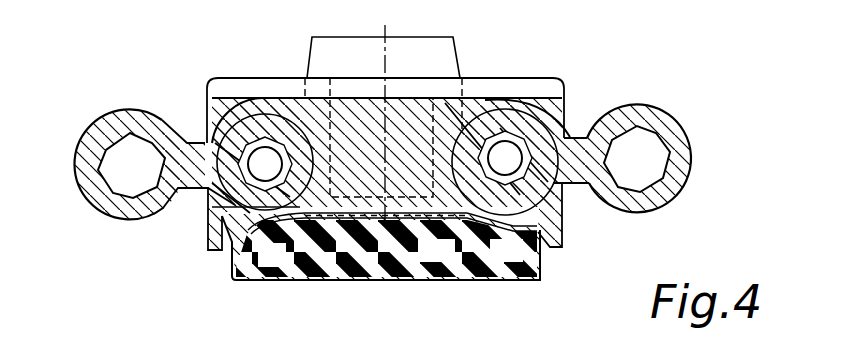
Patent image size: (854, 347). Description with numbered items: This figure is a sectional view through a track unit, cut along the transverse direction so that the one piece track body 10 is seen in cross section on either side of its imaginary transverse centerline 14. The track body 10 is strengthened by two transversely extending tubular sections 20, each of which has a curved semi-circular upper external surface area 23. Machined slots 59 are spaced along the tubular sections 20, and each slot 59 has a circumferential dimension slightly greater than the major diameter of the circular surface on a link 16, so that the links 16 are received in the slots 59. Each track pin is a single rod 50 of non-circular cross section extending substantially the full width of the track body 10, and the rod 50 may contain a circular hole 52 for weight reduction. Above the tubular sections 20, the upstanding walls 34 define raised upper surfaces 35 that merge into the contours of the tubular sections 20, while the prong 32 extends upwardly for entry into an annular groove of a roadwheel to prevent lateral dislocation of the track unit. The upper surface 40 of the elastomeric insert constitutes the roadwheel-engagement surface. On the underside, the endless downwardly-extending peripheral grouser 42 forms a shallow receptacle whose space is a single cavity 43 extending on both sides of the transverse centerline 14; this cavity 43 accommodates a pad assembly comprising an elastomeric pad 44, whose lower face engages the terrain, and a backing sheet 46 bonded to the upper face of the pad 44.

The track body 10 is at (480, 98).
The transverse centerline 14 is at (383, 232).
The link 16 is at (113, 117).
The tubular section 20 is at (383, 117).
The upper external surface area 23 is at (230, 103).
The prong 32 is at (438, 43).
The upstanding wall 34 is at (397, 107).
The raised upper surface 35 is at (423, 93).
The upper surface of elastomeric insert 40 is at (275, 77).
The peripheral grouser 42 is at (210, 248).
The cavity 43 is at (244, 231).
The elastomeric pad 44 is at (313, 257).
The backing sheet 46 is at (467, 222).
The rod 50 is at (537, 226).
The circular hole 52 is at (242, 172).
The slot 59 is at (217, 127).